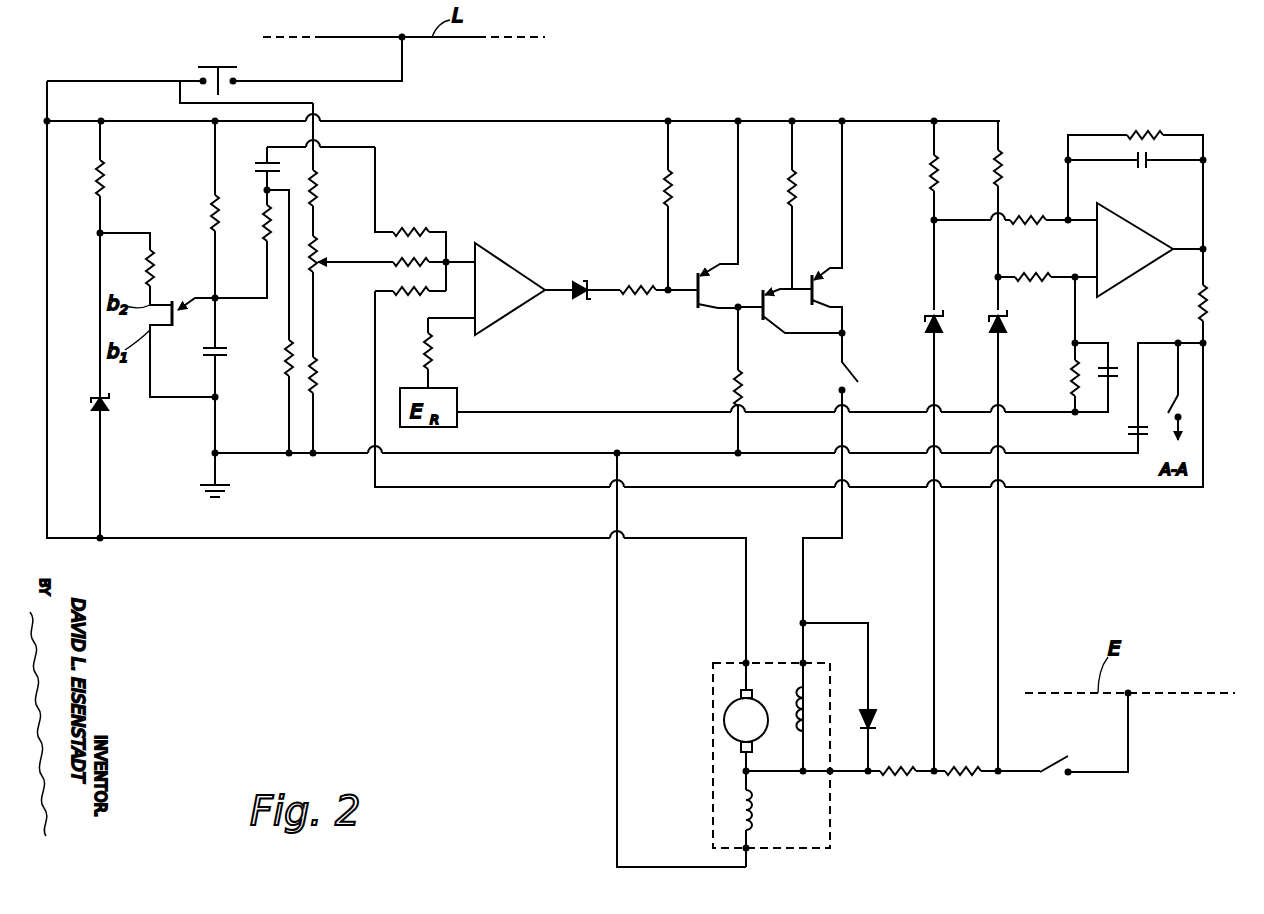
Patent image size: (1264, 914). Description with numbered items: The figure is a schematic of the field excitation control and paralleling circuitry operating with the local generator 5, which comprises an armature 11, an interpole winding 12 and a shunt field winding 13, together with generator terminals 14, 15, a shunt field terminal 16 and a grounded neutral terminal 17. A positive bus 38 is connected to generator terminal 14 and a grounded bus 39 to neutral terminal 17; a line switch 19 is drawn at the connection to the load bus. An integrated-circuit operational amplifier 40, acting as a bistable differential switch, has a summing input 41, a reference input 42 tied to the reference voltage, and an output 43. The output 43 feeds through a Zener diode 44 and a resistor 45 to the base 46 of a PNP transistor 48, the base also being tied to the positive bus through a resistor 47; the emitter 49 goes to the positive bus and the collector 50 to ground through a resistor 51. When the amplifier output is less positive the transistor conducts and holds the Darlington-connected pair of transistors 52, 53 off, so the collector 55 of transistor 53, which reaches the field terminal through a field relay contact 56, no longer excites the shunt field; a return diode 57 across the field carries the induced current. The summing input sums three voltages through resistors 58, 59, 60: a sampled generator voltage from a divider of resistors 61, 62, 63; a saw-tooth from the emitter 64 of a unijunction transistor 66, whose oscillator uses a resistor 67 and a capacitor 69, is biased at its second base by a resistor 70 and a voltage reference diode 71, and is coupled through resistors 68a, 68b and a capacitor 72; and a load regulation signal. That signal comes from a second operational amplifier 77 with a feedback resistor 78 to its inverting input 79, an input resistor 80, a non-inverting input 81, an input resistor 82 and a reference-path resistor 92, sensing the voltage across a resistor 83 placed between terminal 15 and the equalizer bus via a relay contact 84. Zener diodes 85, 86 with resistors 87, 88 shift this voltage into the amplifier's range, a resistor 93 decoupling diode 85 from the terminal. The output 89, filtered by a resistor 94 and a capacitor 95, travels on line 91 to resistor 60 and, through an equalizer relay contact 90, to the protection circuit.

The local generator 5 is at (712, 683).
The armature 11 is at (727, 730).
The interpole winding 12 is at (738, 808).
The shunt field winding 13 is at (812, 690).
The generator terminal 14 is at (742, 662).
The generator terminal 15 is at (832, 775).
The shunt field terminal 16 is at (800, 662).
The neutral terminal 17 is at (750, 850).
The line switch 19 is at (241, 71).
The positive bus 38 is at (520, 121).
The grounded bus 39 is at (263, 456).
The operational amplifier 40 is at (515, 265).
The summing input 41 is at (462, 262).
The reference input 42 is at (445, 325).
The output 43 is at (548, 293).
The Zener diode 44 is at (590, 283).
The resistor 45 is at (638, 293).
The base 46 is at (668, 295).
The resistor 47 is at (662, 188).
The PNP transistor 48 is at (700, 270).
The emitter 49 is at (714, 275).
The collector 50 is at (716, 309).
The resistor 51 is at (745, 396).
The transistor 52 is at (766, 322).
The PNP transistor 53 is at (814, 272).
The collector 55 is at (843, 304).
The contact 56 is at (860, 378).
The return diode 57 is at (872, 710).
The resistor 58 is at (410, 230).
The resistor 59 is at (395, 262).
The resistor 60 is at (410, 296).
The resistor 61 is at (317, 196).
The resistor 62 is at (318, 276).
The resistor 63 is at (318, 372).
The emitter 64 is at (192, 296).
The unijunction transistor 66 is at (174, 328).
The resistor 67 is at (211, 218).
The resistor 68a is at (266, 252).
The resistor 68b is at (286, 360).
The capacitor 69 is at (226, 350).
The resistor 70 is at (106, 176).
The voltage reference diode 71 is at (110, 400).
The capacitor 72 is at (262, 167).
The operational amplifier 77 is at (1122, 284).
The resistor 78 is at (1130, 133).
The inverting input 79 is at (1080, 218).
The input resistor 80 is at (1028, 218).
The non-inverting input 81 is at (1097, 290).
The input resistor 82 is at (1040, 275).
The resistor 83 is at (975, 778).
The contact 84 is at (1050, 762).
The Zener diode 85 is at (928, 318).
The Zener diode 86 is at (992, 318).
The resistor 87 is at (930, 178).
The resistor 88 is at (1005, 168).
The output 89 is at (1172, 247).
The equalizer relay contact 90 is at (1165, 391).
The line 91 is at (766, 490).
The resistor 92 is at (1070, 378).
The resistor 93 is at (900, 778).
The resistor 94 is at (1208, 305).
The capacitor 95 is at (1127, 431).